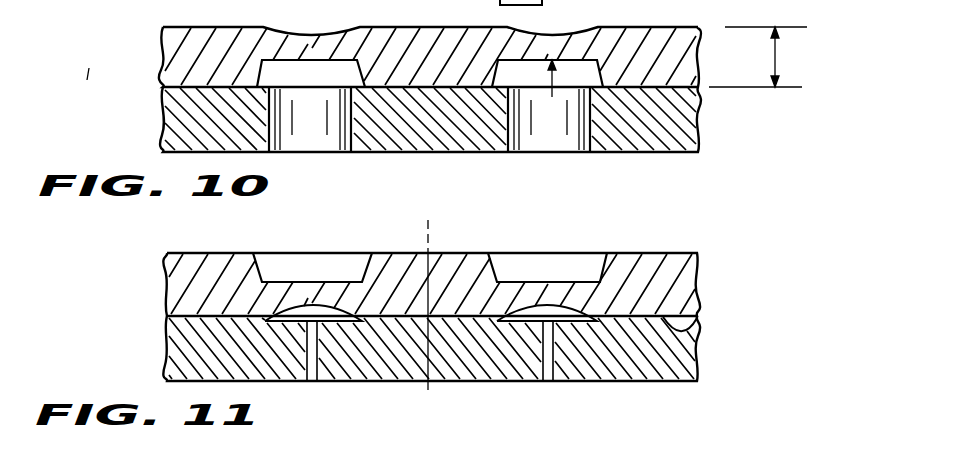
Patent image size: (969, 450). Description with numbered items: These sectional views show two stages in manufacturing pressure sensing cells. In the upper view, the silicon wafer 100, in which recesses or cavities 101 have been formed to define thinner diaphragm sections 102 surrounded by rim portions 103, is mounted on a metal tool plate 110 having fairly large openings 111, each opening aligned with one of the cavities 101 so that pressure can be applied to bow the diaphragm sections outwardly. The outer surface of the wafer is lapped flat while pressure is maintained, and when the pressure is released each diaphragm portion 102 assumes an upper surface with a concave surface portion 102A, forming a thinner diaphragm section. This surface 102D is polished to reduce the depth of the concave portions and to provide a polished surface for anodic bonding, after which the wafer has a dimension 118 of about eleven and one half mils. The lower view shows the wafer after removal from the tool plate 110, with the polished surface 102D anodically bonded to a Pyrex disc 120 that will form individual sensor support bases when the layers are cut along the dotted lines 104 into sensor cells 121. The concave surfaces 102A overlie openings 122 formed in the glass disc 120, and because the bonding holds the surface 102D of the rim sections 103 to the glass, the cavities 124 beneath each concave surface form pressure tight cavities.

In FIG. 10, the silicon wafer 100 is at (693, 53).
In FIG. 11, the silicon wafer 100 is at (690, 278).
In FIG. 10, the recesses or cavities 101 is at (263, 62).
In FIG. 11, the recesses or cavities 101 is at (318, 268).
In FIG. 10, the diaphragm section 102 is at (327, 50).
In FIG. 10, the concave surface portion 102A is at (318, 48).
In FIG. 10, the polished surface 102D is at (658, 27).
In FIG. 11, the polished surface 102D is at (698, 326).
In FIG. 10, the rim portion 103 is at (193, 45).
In FIG. 11, the rim portion 103 is at (463, 297).
In FIG. 10, the dotted lines 104 is at (521, 2).
In FIG. 11, the dotted lines 104 is at (430, 244).
In FIG. 10, the metal tool plate 110 is at (677, 125).
In FIG. 10, the openings 111 is at (316, 133).
In FIG. 10, the dimension 118 is at (777, 58).
In FIG. 11, the Pyrex disc 120 is at (400, 370).
In FIG. 11, the sensor cell 121 is at (210, 246).
In FIG. 11, the openings 122 is at (332, 377).
In FIG. 11, the cavities 124 is at (327, 322).